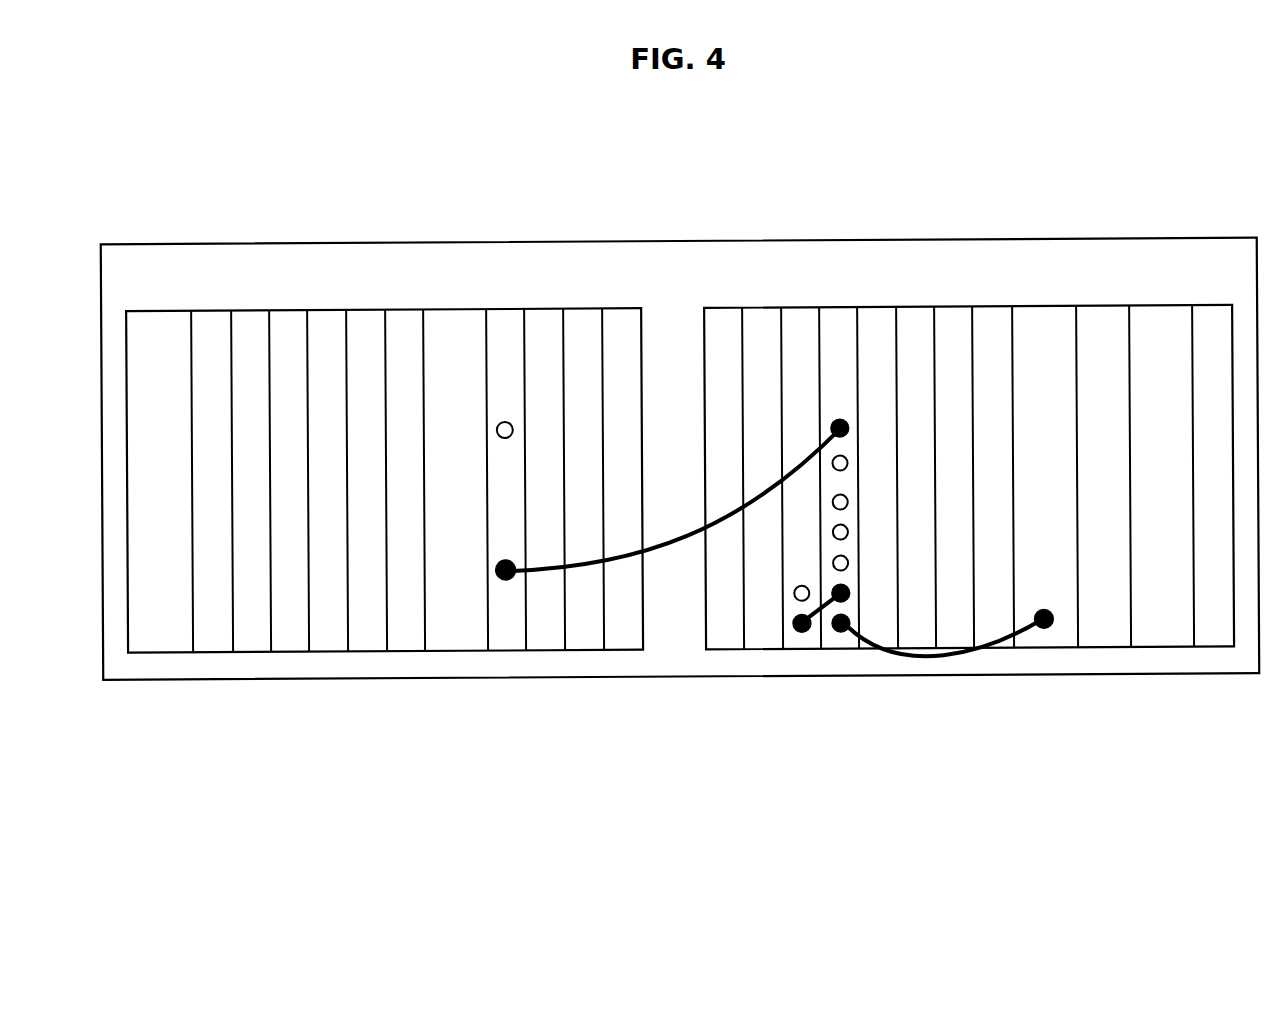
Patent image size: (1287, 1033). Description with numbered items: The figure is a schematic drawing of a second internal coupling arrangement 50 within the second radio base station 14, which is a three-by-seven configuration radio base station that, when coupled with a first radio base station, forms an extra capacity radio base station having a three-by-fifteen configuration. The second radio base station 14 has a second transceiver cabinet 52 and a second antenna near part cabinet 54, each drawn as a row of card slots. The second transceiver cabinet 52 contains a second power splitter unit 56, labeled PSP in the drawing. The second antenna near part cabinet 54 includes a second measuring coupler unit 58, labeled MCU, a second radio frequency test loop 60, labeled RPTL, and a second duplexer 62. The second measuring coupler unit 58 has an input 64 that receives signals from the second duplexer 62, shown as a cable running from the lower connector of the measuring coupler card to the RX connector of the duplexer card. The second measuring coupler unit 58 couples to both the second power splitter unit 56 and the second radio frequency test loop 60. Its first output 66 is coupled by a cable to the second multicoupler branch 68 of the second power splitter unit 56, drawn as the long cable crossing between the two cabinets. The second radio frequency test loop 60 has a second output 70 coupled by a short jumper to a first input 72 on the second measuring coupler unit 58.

The second radio base station 14 is at (161, 241).
The second internal coupling arrangement 50 is at (604, 177).
The second transceiver cabinet 52 is at (381, 524).
The second antenna near part cabinet 54 is at (956, 469).
The second power splitter unit 56 is at (505, 632).
The second measuring coupler unit 58 is at (841, 308).
The second radio frequency test loop 60 is at (799, 308).
The second duplexer 62 is at (1045, 308).
The input 64 is at (839, 633).
The first output 66 is at (847, 437).
The second multicoupler branch 68 is at (497, 580).
The second output 70 is at (800, 633).
The first input 72 is at (834, 588).